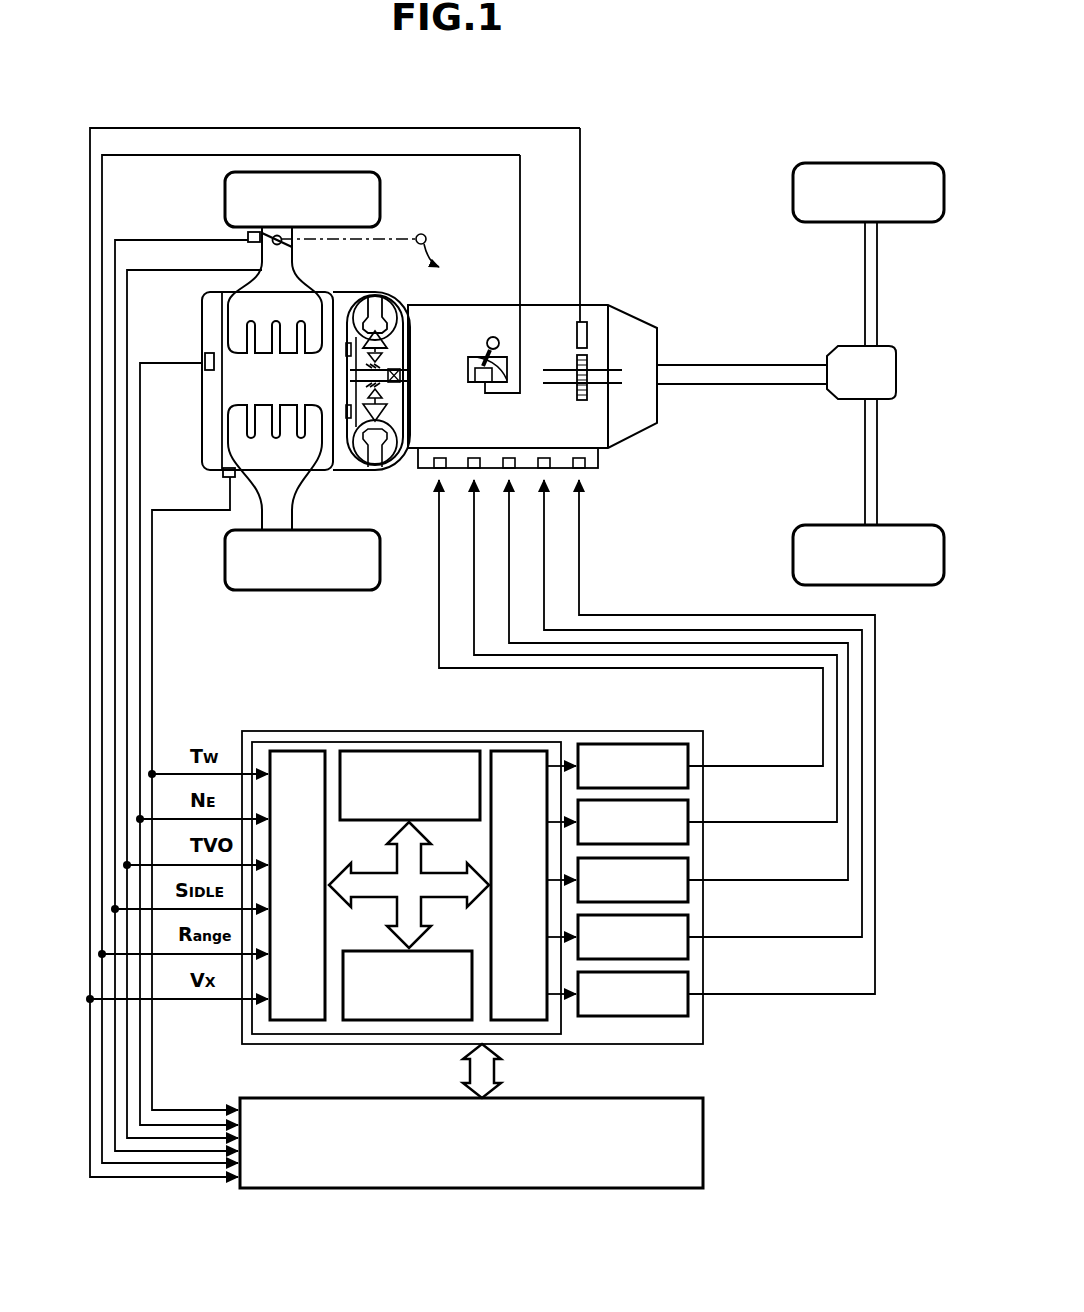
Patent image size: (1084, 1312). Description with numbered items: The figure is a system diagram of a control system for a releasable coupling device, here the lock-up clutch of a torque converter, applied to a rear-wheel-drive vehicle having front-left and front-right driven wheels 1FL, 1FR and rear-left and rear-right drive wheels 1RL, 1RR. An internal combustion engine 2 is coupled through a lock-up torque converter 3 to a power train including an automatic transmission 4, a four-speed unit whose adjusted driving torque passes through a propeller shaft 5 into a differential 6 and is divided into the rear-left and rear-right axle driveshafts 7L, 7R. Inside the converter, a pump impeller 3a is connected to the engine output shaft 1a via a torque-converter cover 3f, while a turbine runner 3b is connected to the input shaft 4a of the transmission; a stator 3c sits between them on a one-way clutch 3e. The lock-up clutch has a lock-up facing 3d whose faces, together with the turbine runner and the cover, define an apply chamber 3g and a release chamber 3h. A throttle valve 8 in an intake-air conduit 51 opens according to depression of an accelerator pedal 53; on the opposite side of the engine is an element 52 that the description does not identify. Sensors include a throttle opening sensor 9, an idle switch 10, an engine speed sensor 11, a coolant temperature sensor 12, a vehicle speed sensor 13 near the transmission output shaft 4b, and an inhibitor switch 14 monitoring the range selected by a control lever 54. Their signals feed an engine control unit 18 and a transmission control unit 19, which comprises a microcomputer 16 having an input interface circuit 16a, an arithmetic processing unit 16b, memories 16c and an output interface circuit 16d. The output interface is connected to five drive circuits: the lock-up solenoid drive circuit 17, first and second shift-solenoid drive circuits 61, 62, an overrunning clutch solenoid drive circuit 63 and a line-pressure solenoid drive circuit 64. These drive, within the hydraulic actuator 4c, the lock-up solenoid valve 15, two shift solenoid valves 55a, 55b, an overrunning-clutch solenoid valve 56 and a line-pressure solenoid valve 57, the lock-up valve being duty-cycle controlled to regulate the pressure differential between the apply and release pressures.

The engine output shaft 1a is at (345, 393).
The front-right driven wheel 1FR is at (262, 172).
The front-left driven wheel 1FL is at (290, 591).
The rear-right drive wheel 1RR is at (865, 163).
The rear-left drive wheel 1RL is at (895, 586).
The internal combustion engine 2 is at (309, 481).
The lock-up torque converter 3 is at (372, 398).
The pump impeller 3a is at (392, 312).
The turbine runner 3b is at (367, 303).
The stator 3c is at (394, 340).
The lock-up facing 3d is at (347, 353).
The one-way clutch 3e is at (388, 356).
The torque-converter cover 3f is at (361, 302).
The apply chamber 3g is at (363, 466).
The release chamber 3h is at (351, 410).
The automatic transmission 4 is at (656, 443).
The input shaft 4a is at (401, 375).
The transmission output shaft 4b is at (619, 372).
The hydraulic actuator 4c is at (600, 469).
The propeller shaft 5 is at (738, 365).
The differential 6 is at (897, 375).
The rear-right axle driveshaft 7R is at (878, 290).
The rear-left axle driveshaft 7L is at (878, 455).
The throttle valve 8 is at (291, 253).
The throttle opening sensor 9 is at (274, 244).
The idle switch 10 is at (252, 232).
The engine speed sensor 11 is at (205, 360).
The coolant temperature sensor 12 is at (224, 474).
The vehicle speed sensor 13 is at (589, 324).
The inhibitor switch 14 is at (485, 389).
The lock-up solenoid valve 15 is at (432, 486).
The microcomputer 16 is at (406, 885).
The input interface circuit 16a is at (297, 751).
The arithmetic processing unit 16b is at (405, 751).
The memories 16c is at (405, 1021).
The output interface circuit 16d is at (518, 751).
The lock-up solenoid drive circuit 17 is at (632, 744).
The engine control unit 18 is at (704, 1145).
The transmission control unit 19 is at (525, 885).
The intake-air conduit 51 is at (293, 222).
The exhaust manifold 52 is at (262, 508).
The accelerator pedal 53 is at (444, 268).
The control lever 54 is at (499, 343).
The shift solenoid valve 55a is at (441, 457).
The shift solenoid valve 55b is at (510, 457).
The overrunning-clutch solenoid valve 56 is at (546, 457).
The line-pressure solenoid valve 57 is at (592, 472).
The first shift-solenoid drive circuit 61 is at (688, 800).
The second shift-solenoid drive circuit 62 is at (688, 858).
The overrunning clutch solenoid drive circuit 63 is at (688, 915).
The line-pressure solenoid drive circuit 64 is at (688, 972).